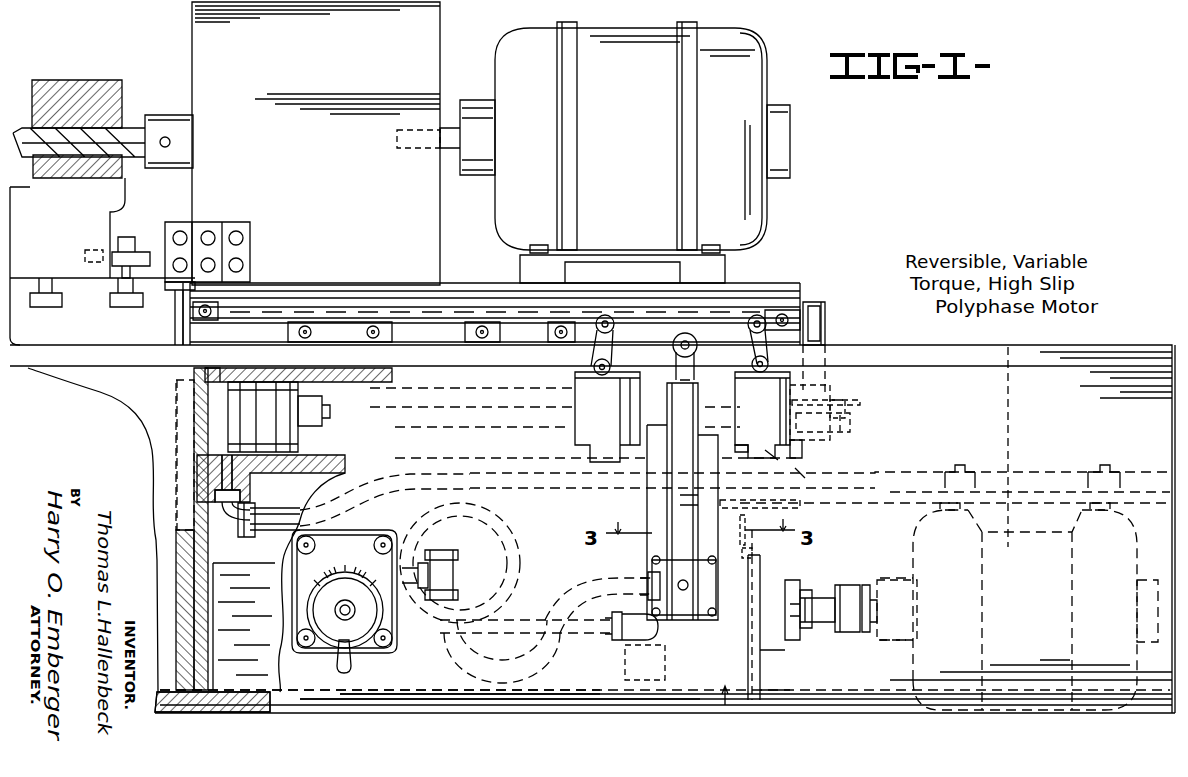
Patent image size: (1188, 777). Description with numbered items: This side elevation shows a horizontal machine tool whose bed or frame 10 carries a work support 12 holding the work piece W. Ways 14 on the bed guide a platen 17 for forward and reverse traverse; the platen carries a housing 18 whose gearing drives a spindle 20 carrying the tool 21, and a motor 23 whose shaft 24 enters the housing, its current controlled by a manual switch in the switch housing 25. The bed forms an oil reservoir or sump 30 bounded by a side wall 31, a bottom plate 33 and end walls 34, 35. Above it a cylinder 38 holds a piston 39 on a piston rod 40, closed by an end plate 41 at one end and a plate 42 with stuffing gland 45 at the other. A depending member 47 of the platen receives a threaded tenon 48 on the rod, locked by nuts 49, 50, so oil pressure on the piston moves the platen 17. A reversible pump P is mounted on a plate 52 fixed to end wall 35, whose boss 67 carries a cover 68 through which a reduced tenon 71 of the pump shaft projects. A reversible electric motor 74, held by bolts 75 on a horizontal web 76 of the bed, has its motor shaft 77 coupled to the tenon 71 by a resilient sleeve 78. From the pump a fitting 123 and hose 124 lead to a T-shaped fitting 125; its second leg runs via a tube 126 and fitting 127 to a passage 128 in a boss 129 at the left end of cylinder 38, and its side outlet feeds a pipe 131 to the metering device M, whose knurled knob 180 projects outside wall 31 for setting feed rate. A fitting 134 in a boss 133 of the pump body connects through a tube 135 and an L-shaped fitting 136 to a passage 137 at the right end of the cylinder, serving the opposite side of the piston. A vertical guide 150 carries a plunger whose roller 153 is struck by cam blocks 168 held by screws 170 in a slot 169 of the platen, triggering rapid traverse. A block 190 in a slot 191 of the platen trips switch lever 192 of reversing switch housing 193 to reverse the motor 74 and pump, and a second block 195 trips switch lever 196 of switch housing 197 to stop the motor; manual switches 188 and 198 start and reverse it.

The bed or frame 10 is at (831, 719).
The work support 12 is at (152, 278).
The ways 14 is at (1080, 352).
The platen 17 is at (800, 300).
The housing 18 is at (425, 45).
The spindle or mandrel 20 is at (158, 115).
The tool 21 is at (14, 128).
The electrically actuated motor 23 is at (757, 65).
The shaft 24 is at (447, 128).
The switch housing 25 is at (180, 232).
The reservoir or sump 30 is at (588, 698).
The side wall 31 is at (408, 680).
The bottom plate 33 is at (492, 700).
The end wall 34 is at (218, 683).
The end wall 35 is at (747, 550).
The cylinder 38 is at (228, 398).
The piston 39 is at (228, 428).
The piston rod 40 is at (210, 450).
The abutment or end plate 41 is at (194, 388).
The plate 42 is at (790, 455).
The stuffing gland 45 is at (765, 457).
The depending portion or member 47 is at (820, 347).
The threaded tenon 48 is at (852, 425).
The nut 49 is at (830, 395).
The nut 50 is at (845, 409).
The plate 52 is at (761, 572).
The boss portion 67 is at (792, 588).
The cover member 68 is at (785, 668).
The reduced tenon portion 71 is at (804, 622).
The reversible electric motor 74 is at (1007, 318).
The bolts 75 is at (962, 468).
The horizontal web portion 76 is at (1045, 480).
The motor shaft 77 is at (867, 632).
The resilient sleeve 78 is at (837, 632).
The fitting 123 is at (648, 576).
The flexible tube or hose 124 is at (576, 592).
The T-shaped fitting 125 is at (456, 570).
The flexible tube 126 is at (375, 493).
The fitting 127 is at (233, 526).
The opening or passage 128 is at (250, 503).
The boss 129 is at (192, 492).
The pipe 131 is at (438, 600).
The boss 133 is at (625, 648).
The fitting 134 is at (622, 636).
The flexible tube 135 is at (483, 619).
The L-shaped fitting 136 is at (740, 527).
The passage 137 is at (800, 508).
The guide or cylinder 150 is at (655, 512).
The roller 153 is at (740, 375).
The cams or blocks 168 is at (378, 330).
The slot 169 is at (265, 328).
The screws 170 is at (320, 328).
The knurled knob 180 is at (362, 664).
The switch 188 is at (208, 231).
The adjustable block or abutment 190 is at (812, 300).
The slot 191 is at (768, 345).
The switch lever 192 is at (820, 316).
The switch housing 193 is at (790, 398).
The second block 195 is at (238, 300).
The switch lever 196 is at (614, 318).
The switch housing 197 is at (573, 403).
The switch 198 is at (245, 230).
The adjustable fluid metering device M is at (322, 655).
The reversible fluid pump P is at (728, 708).
The work piece W is at (92, 82).